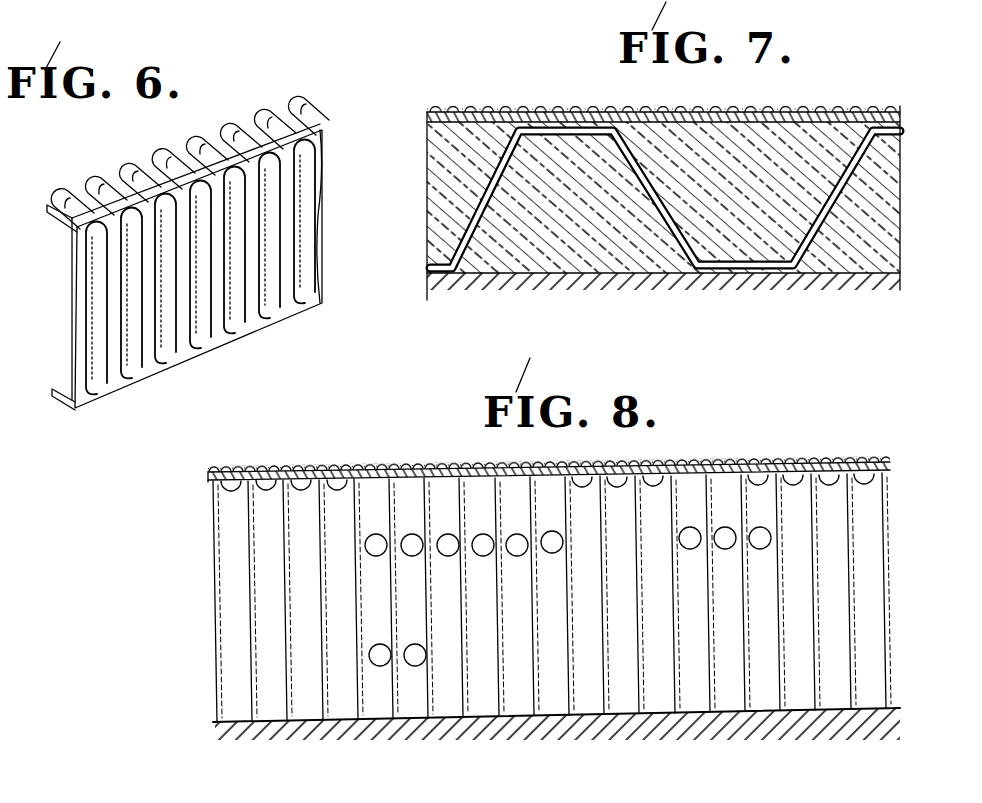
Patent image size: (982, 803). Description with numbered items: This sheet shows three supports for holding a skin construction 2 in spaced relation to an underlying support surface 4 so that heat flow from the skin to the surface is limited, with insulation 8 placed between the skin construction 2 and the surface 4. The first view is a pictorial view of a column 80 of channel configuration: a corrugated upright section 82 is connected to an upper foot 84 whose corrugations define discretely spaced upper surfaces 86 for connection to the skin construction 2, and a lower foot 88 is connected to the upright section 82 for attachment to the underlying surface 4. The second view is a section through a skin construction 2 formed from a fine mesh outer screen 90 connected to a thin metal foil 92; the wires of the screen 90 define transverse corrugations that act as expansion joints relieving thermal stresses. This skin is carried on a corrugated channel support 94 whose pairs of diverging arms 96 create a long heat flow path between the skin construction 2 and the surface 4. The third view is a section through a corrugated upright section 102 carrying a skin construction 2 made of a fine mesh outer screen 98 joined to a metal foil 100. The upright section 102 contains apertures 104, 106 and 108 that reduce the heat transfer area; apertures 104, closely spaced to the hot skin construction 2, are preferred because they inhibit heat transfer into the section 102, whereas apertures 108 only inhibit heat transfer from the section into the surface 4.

In FIG. 7, the skin construction 2 is at (630, 172).
In FIG. 8, the skin construction 2 is at (508, 570).
In FIG. 7, the support surface 4 is at (830, 273).
In FIG. 8, the support surface 4 is at (270, 717).
In FIG. 7, the insulation 8 is at (523, 227).
In FIG. 6, the column 80 is at (182, 273).
In FIG. 6, the corrugated upright section 82 is at (73, 340).
In FIG. 6, the upper foot 84 is at (47, 209).
In FIG. 6, the upper surfaces 86 is at (128, 160).
In FIG. 6, the lower foot 88 is at (53, 401).
In FIG. 7, the fine mesh outer screen 90 is at (547, 107).
In FIG. 7, the thin metal foil 92 is at (428, 116).
In FIG. 7, the corrugated channel support 94 is at (668, 236).
In FIG. 7, the diverging arms 96 is at (478, 208).
In FIG. 8, the fine mesh outer screen 98 is at (316, 467).
In FIG. 8, the metal foil 100 is at (210, 488).
In FIG. 8, the corrugated upright section 102 is at (232, 606).
In FIG. 8, the apertures 104 is at (270, 489).
In FIG. 8, the apertures 106 is at (412, 540).
In FIG. 8, the apertures 108 is at (410, 660).